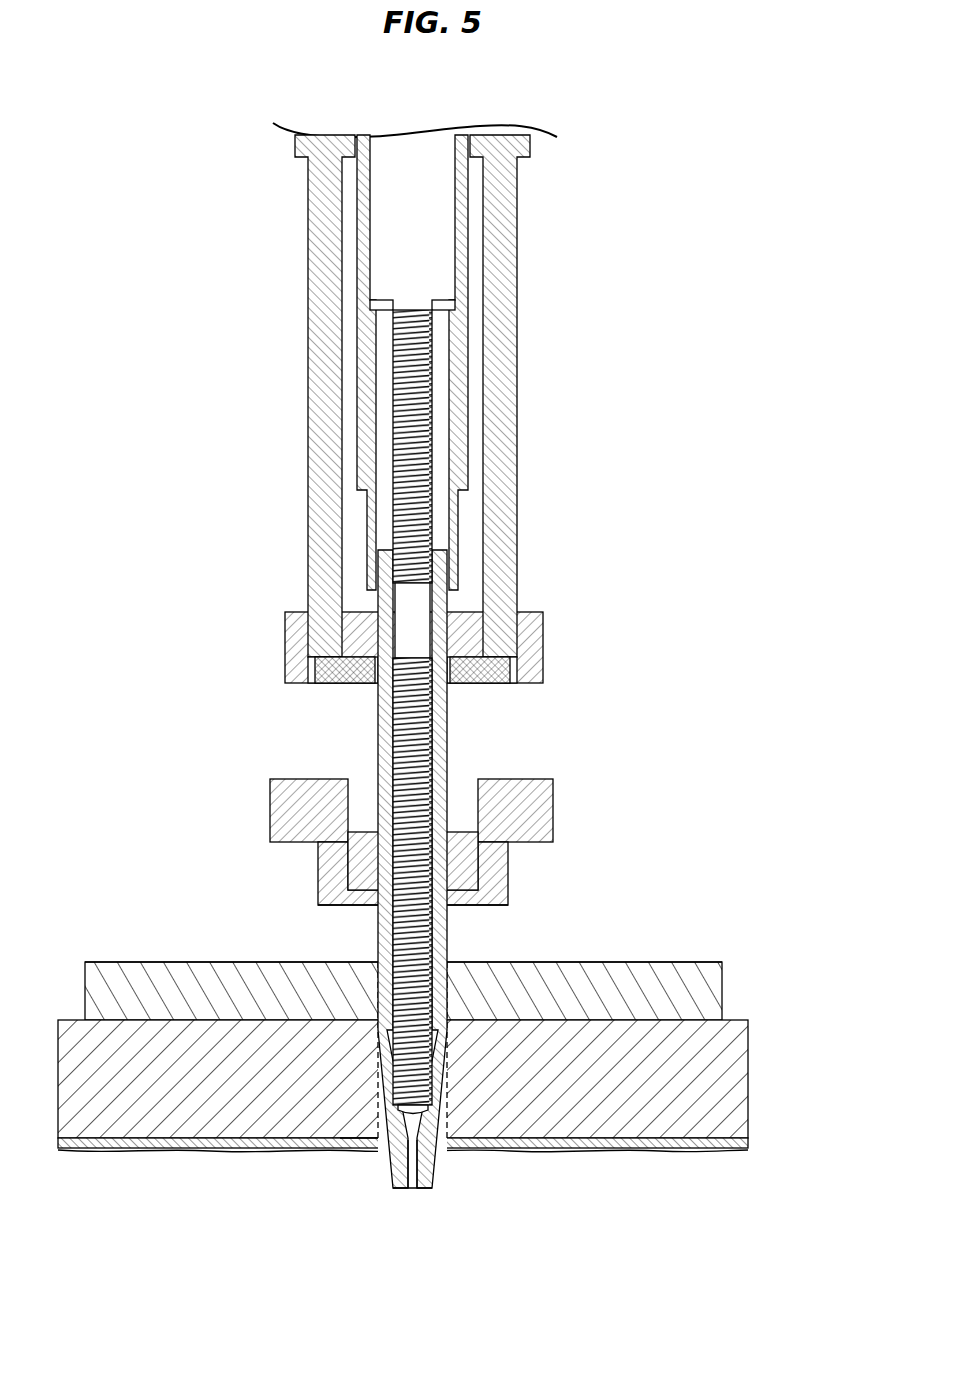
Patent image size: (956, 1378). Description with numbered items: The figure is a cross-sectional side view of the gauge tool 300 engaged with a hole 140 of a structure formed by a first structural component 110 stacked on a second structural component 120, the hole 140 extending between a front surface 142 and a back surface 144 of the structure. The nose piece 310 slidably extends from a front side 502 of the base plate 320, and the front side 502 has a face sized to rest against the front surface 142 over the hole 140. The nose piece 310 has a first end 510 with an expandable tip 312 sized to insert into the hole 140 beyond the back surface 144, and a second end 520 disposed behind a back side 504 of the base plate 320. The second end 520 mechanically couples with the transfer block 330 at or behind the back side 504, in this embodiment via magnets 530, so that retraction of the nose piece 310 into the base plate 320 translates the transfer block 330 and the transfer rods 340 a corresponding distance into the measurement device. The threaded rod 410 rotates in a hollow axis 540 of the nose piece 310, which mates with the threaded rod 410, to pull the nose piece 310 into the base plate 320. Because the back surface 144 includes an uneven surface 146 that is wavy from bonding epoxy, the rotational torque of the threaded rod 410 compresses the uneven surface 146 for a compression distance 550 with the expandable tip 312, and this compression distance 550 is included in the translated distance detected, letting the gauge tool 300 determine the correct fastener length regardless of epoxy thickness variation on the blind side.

The gauge tool 300 is at (122, 234).
The transfer rods 340 is at (308, 413).
The transfer block 330 is at (287, 628).
The magnets 530 is at (330, 683).
The threaded rod 410 is at (407, 737).
The second end 520 is at (562, 780).
The base plate 320 is at (325, 868).
The back side 504 is at (492, 842).
The front side 502 is at (498, 908).
The nose piece 310 is at (385, 937).
The hollow axis 540 is at (420, 946).
The front surface 142 is at (680, 956).
The first structural component 110 is at (715, 988).
The second structural component 120 is at (742, 1073).
The back surface 144 is at (722, 1152).
The uneven surface 146 is at (640, 1156).
The hole 140 is at (447, 1095).
The compression distance 550 is at (374, 1134).
The expandable tip 312 is at (352, 1180).
The first end 510 is at (404, 1202).